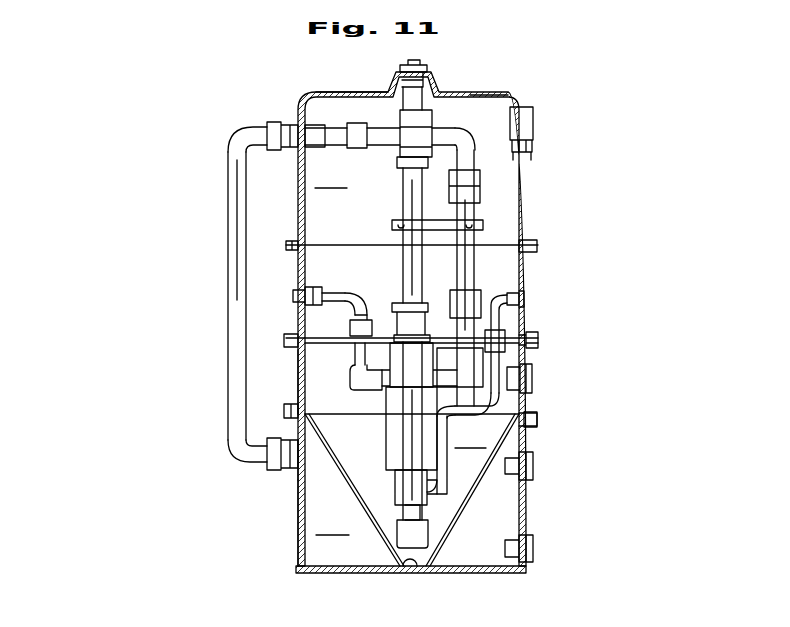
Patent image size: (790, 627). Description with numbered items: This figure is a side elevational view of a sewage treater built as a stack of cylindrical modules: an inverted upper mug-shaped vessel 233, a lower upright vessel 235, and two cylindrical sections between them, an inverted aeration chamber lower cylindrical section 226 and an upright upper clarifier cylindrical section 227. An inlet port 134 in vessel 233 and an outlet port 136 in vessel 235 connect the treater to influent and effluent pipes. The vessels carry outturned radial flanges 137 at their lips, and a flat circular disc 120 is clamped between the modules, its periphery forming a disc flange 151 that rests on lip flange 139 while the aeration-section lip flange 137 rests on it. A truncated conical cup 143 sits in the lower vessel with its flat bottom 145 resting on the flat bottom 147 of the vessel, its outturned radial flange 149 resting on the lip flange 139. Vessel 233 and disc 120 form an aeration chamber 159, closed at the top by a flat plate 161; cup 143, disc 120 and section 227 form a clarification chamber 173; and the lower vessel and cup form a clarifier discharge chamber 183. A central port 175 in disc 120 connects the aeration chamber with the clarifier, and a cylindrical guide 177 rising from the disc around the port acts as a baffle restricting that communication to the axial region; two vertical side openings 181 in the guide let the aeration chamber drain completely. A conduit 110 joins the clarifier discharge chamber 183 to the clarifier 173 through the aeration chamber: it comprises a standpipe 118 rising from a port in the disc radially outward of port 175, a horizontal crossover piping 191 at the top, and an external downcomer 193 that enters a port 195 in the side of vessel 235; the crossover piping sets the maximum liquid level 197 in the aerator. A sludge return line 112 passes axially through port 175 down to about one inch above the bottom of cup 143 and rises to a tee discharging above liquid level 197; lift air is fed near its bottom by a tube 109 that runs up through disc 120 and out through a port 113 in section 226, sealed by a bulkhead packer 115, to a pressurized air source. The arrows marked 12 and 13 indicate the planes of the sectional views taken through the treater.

The section line 12 is at (456, 49).
The section line 13 is at (302, 310).
The tube 109 is at (488, 390).
The conduit 110 is at (276, 124).
The sludge return line 112 is at (403, 200).
The port 113 is at (524, 300).
The bulkhead packer 115 is at (512, 294).
The standpipe 118 is at (458, 266).
The disc 120 is at (350, 338).
The inlet port 134 is at (533, 112).
The outlet port 136 is at (533, 540).
The outturned radial flange 137 is at (538, 331).
The lip flange 139 is at (290, 351).
The truncated conical cup 143 is at (352, 493).
The flat bottom of the cup 145 is at (416, 576).
The flat bottom of the upright vessel 147 is at (348, 571).
The outturned radial flange of the cup 149 is at (538, 415).
The disc flange 151 is at (538, 346).
The aeration chamber 159 is at (331, 179).
The flat plate 161 is at (366, 92).
The clarification chamber 173 is at (472, 490).
The central port 175 is at (368, 352).
The cylindrical guide 177 is at (385, 404).
The vertical side openings 181 is at (407, 305).
The clarifier discharge chamber 183 is at (332, 526).
The horizontal crossover piping 191 is at (368, 128).
The downcomer 193 is at (228, 320).
The port 195 is at (318, 470).
The maximum liquid level 197 is at (488, 108).
The aeration chamber lower cylindrical section 226 is at (526, 264).
The upper clarifier cylindrical section 227 is at (298, 385).
The vessel 233 is at (527, 179).
The vessel 235 is at (301, 548).